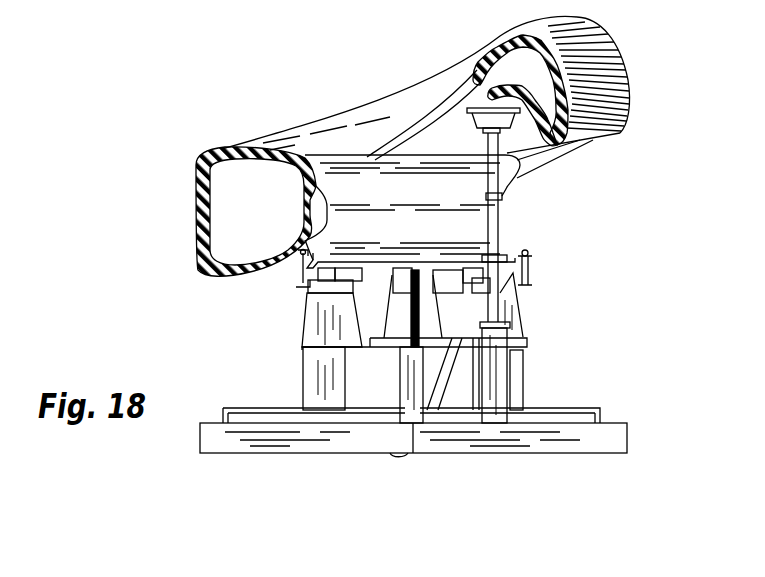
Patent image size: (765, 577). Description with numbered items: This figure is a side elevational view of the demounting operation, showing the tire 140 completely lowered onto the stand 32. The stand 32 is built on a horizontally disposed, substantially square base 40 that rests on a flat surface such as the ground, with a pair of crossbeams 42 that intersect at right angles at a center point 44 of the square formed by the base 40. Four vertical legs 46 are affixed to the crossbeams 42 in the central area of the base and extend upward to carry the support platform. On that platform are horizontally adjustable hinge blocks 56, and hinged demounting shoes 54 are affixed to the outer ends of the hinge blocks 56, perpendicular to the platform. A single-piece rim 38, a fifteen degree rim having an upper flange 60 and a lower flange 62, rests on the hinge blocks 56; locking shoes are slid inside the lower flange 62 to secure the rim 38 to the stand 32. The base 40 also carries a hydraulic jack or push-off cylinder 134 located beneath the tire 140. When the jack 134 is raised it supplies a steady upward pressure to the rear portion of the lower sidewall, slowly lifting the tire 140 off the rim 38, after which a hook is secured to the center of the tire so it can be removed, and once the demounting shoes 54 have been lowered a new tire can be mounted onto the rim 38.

The tire 140 is at (600, 90).
The upper flange 60 is at (515, 163).
The single-piece rim 38 is at (510, 183).
The lower flange 62 is at (514, 257).
The demounting shoes 54 is at (298, 272).
The hinge blocks 56 is at (310, 290).
The stand 32 is at (228, 338).
The vertical legs 46 is at (313, 373).
The crossbeams 42 is at (263, 418).
The center point 44 is at (390, 452).
The base 40 is at (610, 437).
The hydraulic jack 134 is at (493, 355).